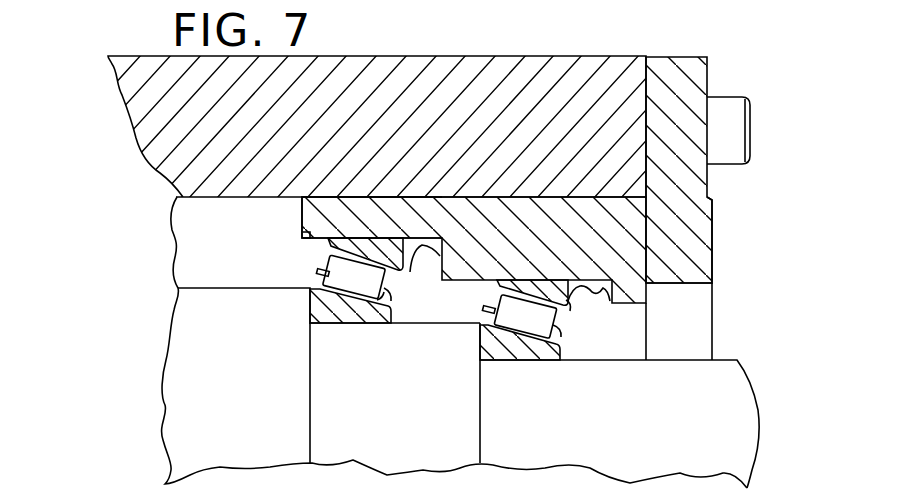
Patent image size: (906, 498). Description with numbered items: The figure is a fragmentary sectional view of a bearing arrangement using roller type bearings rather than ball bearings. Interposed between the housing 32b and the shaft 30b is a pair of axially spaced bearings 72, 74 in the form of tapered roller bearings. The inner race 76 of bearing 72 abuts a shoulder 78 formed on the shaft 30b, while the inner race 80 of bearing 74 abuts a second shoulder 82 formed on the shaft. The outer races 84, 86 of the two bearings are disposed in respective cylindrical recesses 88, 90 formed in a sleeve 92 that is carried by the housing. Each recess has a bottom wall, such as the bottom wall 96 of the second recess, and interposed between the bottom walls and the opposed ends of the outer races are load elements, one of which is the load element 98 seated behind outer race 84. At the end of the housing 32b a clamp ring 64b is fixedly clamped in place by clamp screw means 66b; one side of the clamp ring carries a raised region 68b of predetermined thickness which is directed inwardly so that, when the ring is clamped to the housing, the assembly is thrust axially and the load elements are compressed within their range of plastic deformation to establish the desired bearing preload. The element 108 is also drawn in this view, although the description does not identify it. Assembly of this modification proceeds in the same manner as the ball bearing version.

The housing 32b is at (598, 63).
The clamp ring 64b is at (695, 70).
The clamp screw means 66b is at (730, 118).
The raised region 68b is at (712, 207).
The shaft 30b is at (742, 383).
The sleeve 92 is at (302, 215).
The cylindrical recess 88 is at (308, 240).
The outer race 84 is at (333, 247).
The load element 98 is at (397, 277).
The outer race 86 is at (568, 305).
The inner race 80 is at (550, 348).
The bottom wall 96 is at (406, 256).
The cylindrical recess 90 is at (476, 279).
The inner race 76 is at (352, 314).
The tapered roller bearing 74 is at (527, 350).
The tapered roller bearing 72 is at (362, 325).
The shoulder 78 is at (304, 418).
The shoulder 82 is at (478, 440).
The spacer 108 is at (600, 292).